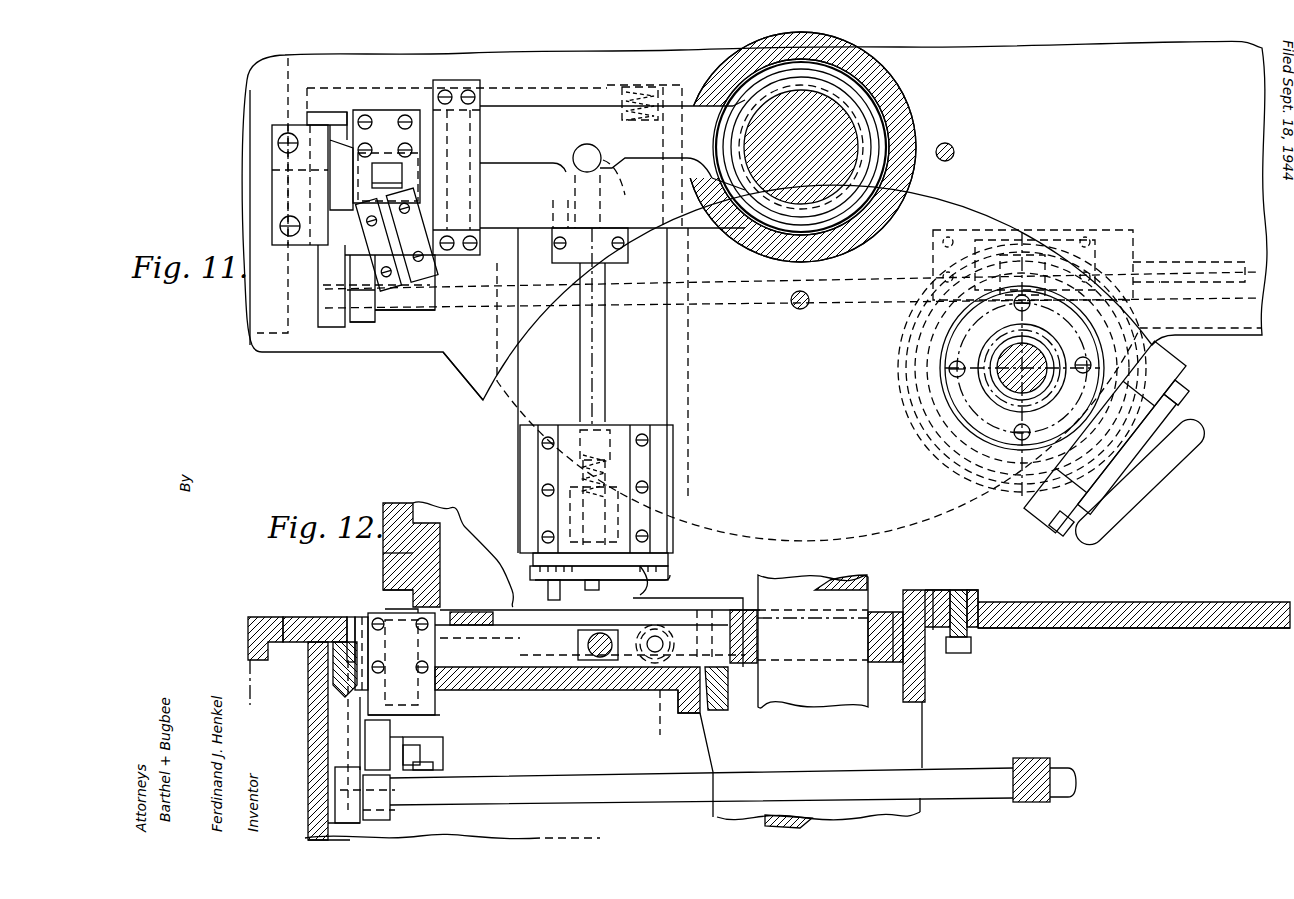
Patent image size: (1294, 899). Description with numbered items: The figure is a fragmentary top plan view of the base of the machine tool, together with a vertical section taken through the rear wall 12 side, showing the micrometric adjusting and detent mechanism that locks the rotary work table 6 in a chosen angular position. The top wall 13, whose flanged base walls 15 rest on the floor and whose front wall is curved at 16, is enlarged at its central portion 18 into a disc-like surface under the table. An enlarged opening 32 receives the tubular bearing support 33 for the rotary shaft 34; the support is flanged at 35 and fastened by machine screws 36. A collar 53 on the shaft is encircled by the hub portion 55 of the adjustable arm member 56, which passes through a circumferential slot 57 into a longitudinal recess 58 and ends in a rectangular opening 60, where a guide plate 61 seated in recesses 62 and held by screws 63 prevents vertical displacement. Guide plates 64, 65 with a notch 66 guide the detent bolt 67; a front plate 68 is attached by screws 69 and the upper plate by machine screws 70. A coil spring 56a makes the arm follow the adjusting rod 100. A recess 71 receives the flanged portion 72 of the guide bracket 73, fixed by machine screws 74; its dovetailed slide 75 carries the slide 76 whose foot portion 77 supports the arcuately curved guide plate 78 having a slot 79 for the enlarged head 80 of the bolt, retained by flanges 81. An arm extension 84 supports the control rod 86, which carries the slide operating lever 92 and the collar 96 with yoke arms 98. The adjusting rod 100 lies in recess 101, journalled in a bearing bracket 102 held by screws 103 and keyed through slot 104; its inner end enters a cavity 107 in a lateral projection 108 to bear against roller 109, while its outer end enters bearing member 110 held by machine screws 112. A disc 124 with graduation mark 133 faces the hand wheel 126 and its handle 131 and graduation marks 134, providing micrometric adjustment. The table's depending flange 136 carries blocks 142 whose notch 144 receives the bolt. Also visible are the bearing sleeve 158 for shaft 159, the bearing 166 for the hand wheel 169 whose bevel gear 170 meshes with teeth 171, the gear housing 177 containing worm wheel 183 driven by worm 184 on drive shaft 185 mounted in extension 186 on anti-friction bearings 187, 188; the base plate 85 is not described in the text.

In FIG. 12, the rotary work table 6 is at (460, 480).
In FIG. 11, the rear wall 12 is at (990, 152).
In FIG. 11, the top wall 13 is at (495, 528).
In FIG. 12, the top wall 13 is at (1135, 602).
In FIG. 11, the flange 15 is at (913, 288).
In FIG. 11, the arcuate curve 16 is at (1017, 232).
In FIG. 11, the central portion 18 is at (821, 468).
In FIG. 11, the enlarged opening 32 is at (908, 112).
In FIG. 12, the enlarged opening 32 is at (930, 632).
In FIG. 11, the bearing support 33 is at (890, 183).
In FIG. 12, the bearing support 33 is at (922, 738).
In FIG. 11, the rotary shaft 34 is at (812, 115).
In FIG. 12, the rotary shaft 34 is at (880, 822).
In FIG. 12, the flange 35 is at (976, 598).
In FIG. 11, the machine screws 36 is at (805, 316).
In FIG. 12, the machine screws 36 is at (960, 653).
In FIG. 11, the collar 53 is at (865, 133).
In FIG. 12, the collar 53 is at (878, 592).
In FIG. 11, the hub portion 55 is at (875, 145).
In FIG. 12, the hub portion 55 is at (888, 662).
In FIG. 11, the adjustable arm member 56 is at (645, 154).
In FIG. 12, the adjustable arm member 56 is at (535, 690).
In FIG. 11, the coil spring 56a is at (640, 95).
In FIG. 12, the coil spring 56a is at (671, 719).
In FIG. 11, the circumferential slot 57 is at (708, 84).
In FIG. 11, the longitudinal recess 58 is at (540, 106).
In FIG. 12, the longitudinal recess 58 is at (655, 668).
In FIG. 11, the rectangular opening 60 is at (435, 312).
In FIG. 12, the rectangular opening 60 is at (470, 690).
In FIG. 11, the guide plate 61 is at (482, 176).
In FIG. 12, the guide plate 61 is at (478, 612).
In FIG. 11, the recesses 62 is at (440, 88).
In FIG. 11, the machine screws 63 is at (450, 92).
In FIG. 11, the guide plate 64 is at (380, 122).
In FIG. 12, the guide plate 64 is at (366, 617).
In FIG. 12, the guide plate 65 is at (440, 725).
In FIG. 11, the notch 66 is at (382, 158).
In FIG. 12, the notch 66 is at (455, 715).
In FIG. 11, the detent bolt 67 is at (387, 175).
In FIG. 12, the detent bolt 67 is at (455, 742).
In FIG. 11, the front plate 68 is at (397, 239).
In FIG. 12, the front plate 68 is at (401, 662).
In FIG. 12, the screws 69 is at (440, 652).
In FIG. 11, the machine screws 70 is at (363, 128).
In FIG. 11, the recess 71 is at (330, 188).
In FIG. 12, the recess 71 is at (280, 617).
In FIG. 11, the flanged portion 72 is at (298, 197).
In FIG. 12, the flanged portion 72 is at (318, 617).
In FIG. 11, the guide bracket 73 is at (330, 170).
In FIG. 12, the guide bracket 73 is at (335, 672).
In FIG. 11, the machine screws 74 is at (278, 142).
In FIG. 11, the dovetailed slide 75 is at (330, 115).
In FIG. 12, the dovetailed slide 75 is at (351, 625).
In FIG. 11, the slide 76 is at (330, 178).
In FIG. 12, the slide 76 is at (345, 684).
In FIG. 12, the foot portion 77 is at (402, 742).
In FIG. 11, the arcuately curved guide plate 78 is at (400, 262).
In FIG. 12, the arcuately curved guide plate 78 is at (445, 765).
In FIG. 12, the slot 79 is at (430, 762).
In FIG. 12, the enlarged head 80 is at (410, 770).
In FIG. 11, the retaining flanges 81 is at (398, 270).
In FIG. 12, the retaining flanges 81 is at (345, 730).
In FIG. 11, the arm extension 84 is at (327, 263).
In FIG. 11, the base plate 85 is at (330, 327).
In FIG. 12, the base plate 85 is at (330, 826).
In FIG. 11, the control rod 86 is at (395, 312).
In FIG. 12, the control rod 86 is at (625, 793).
In FIG. 11, the slide operating lever 92 is at (365, 322).
In FIG. 12, the slide operating lever 92 is at (380, 805).
In FIG. 12, the collar 96 is at (1025, 758).
In FIG. 11, the yoke arms 98 is at (908, 345).
In FIG. 11, the adjusting rod 100 is at (606, 348).
In FIG. 12, the adjusting rod 100 is at (605, 660).
In FIG. 11, the recess 101 is at (662, 336).
In FIG. 11, the bearing bracket 102 is at (564, 258).
In FIG. 11, the screws 103 is at (553, 244).
In FIG. 11, the longitudinal slot 104 is at (575, 215).
In FIG. 12, the longitudinal slot 104 is at (595, 655).
In FIG. 11, the cavity 107 is at (628, 185).
In FIG. 12, the cavity 107 is at (585, 653).
In FIG. 11, the lateral projection 108 is at (568, 180).
In FIG. 12, the lateral projection 108 is at (577, 642).
In FIG. 11, the roller 109 is at (577, 172).
In FIG. 11, the bearing member 110 is at (625, 455).
In FIG. 11, the machine screws 112 is at (650, 487).
In FIG. 11, the disc 124 is at (668, 558).
In FIG. 11, the hand wheel 126 is at (668, 576).
In FIG. 11, the handle 131 is at (546, 600).
In FIG. 11, the graduation mark 133 is at (650, 590).
In FIG. 11, the graduation marks 134 is at (592, 585).
In FIG. 12, the depending flange 136 is at (392, 536).
In FIG. 12, the blocks 142 is at (395, 560).
In FIG. 12, the notch 144 is at (390, 592).
In FIG. 11, the bearing sleeve 158 is at (975, 418).
In FIG. 11, the rotary shaft 159 is at (940, 405).
In FIG. 11, the bearing 166 is at (1140, 420).
In FIG. 11, the hand wheel 169 is at (1200, 428).
In FIG. 11, the bevel gear 170 is at (1014, 412).
In FIG. 11, the bevel gear teeth 171 is at (1015, 370).
In FIG. 11, the gear housing 177 is at (930, 438).
In FIG. 11, the worm wheel 183 is at (918, 385).
In FIG. 11, the worm 184 is at (1030, 232).
In FIG. 11, the drive shaft 185 is at (1176, 260).
In FIG. 11, the extension 186 is at (1060, 240).
In FIG. 11, the anti-friction bearing 187 is at (946, 236).
In FIG. 11, the anti-friction bearing 188 is at (1088, 236).